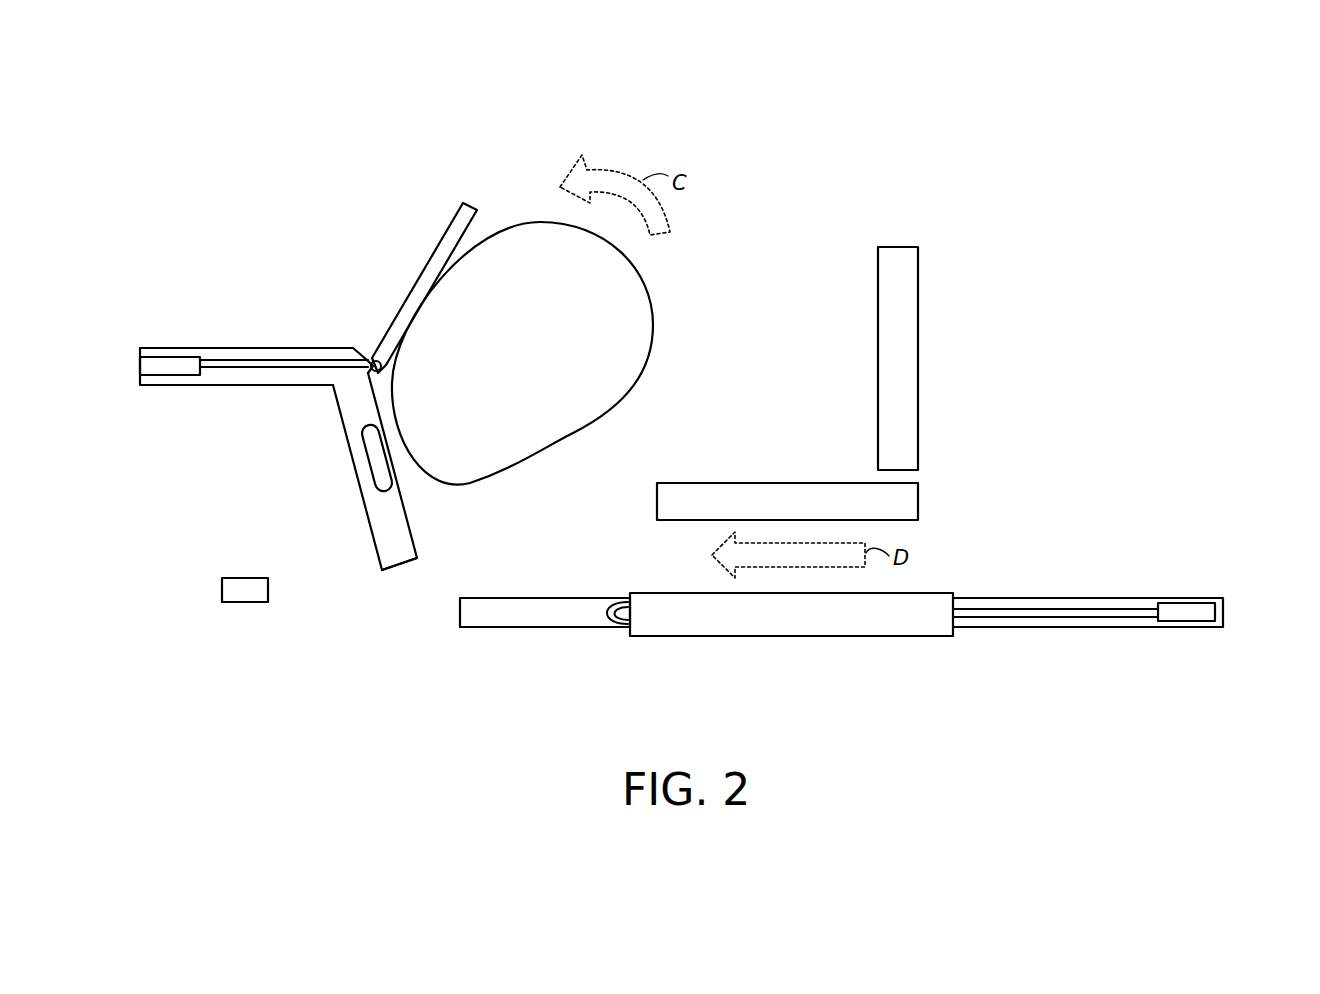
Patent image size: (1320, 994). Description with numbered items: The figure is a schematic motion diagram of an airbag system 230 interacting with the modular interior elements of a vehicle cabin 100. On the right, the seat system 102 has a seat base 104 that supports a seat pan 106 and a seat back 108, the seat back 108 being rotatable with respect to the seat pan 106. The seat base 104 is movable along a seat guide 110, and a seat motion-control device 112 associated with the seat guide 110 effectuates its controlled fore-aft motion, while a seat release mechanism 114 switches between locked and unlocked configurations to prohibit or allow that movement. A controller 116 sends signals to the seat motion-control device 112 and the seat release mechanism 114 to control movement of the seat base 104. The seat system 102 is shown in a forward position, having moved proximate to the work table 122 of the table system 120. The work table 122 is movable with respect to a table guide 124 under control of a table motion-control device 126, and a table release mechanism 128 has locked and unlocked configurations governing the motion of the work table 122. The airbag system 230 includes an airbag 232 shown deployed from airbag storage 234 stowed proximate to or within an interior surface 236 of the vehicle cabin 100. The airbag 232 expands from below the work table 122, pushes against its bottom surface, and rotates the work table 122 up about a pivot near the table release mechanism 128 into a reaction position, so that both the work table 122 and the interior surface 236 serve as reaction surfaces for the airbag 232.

The vehicle cabin 100 is at (244, 106).
The seat system 102 is at (736, 433).
The seat base 104 is at (772, 637).
The seat pan 106 is at (657, 507).
The seat back 108 is at (918, 343).
The seat guide 110 is at (488, 628).
The seat motion-control device 112 is at (1192, 622).
The seat release mechanism 114 is at (610, 602).
The controller 116 is at (230, 578).
The table system 120 is at (280, 259).
The work table 122 is at (470, 203).
The table guide 124 is at (228, 347).
The table motion-control device 126 is at (170, 376).
The table release mechanism 128 is at (377, 357).
The airbag system 230 is at (335, 452).
The airbag 232 is at (540, 367).
The airbag storage 234 is at (385, 490).
The interior surface 236 is at (417, 557).